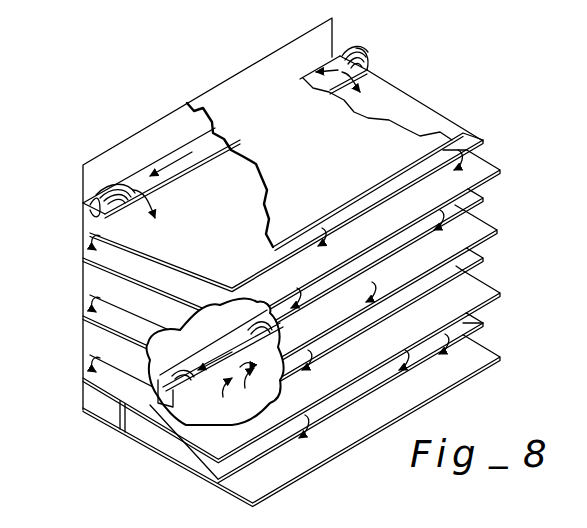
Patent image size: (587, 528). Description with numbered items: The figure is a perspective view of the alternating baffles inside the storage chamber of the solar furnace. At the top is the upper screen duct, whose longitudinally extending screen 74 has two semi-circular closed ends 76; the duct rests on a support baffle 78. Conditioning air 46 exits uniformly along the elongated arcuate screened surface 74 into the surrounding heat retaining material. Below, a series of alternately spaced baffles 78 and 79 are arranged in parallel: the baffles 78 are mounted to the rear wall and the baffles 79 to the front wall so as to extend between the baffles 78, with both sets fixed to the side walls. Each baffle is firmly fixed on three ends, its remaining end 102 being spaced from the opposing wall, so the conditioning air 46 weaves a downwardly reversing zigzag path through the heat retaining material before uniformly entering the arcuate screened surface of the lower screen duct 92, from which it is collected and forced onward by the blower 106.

The longitudinally extending screen 74 is at (137, 167).
The semi-circular closed ends 76 is at (100, 205).
The support baffle 78 is at (437, 113).
The baffle 79 is at (484, 170).
The conditioning air 46 is at (203, 172).
The lower screen duct 92 is at (234, 344).
The remaining end 102 is at (370, 218).
The blower 106 is at (130, 428).